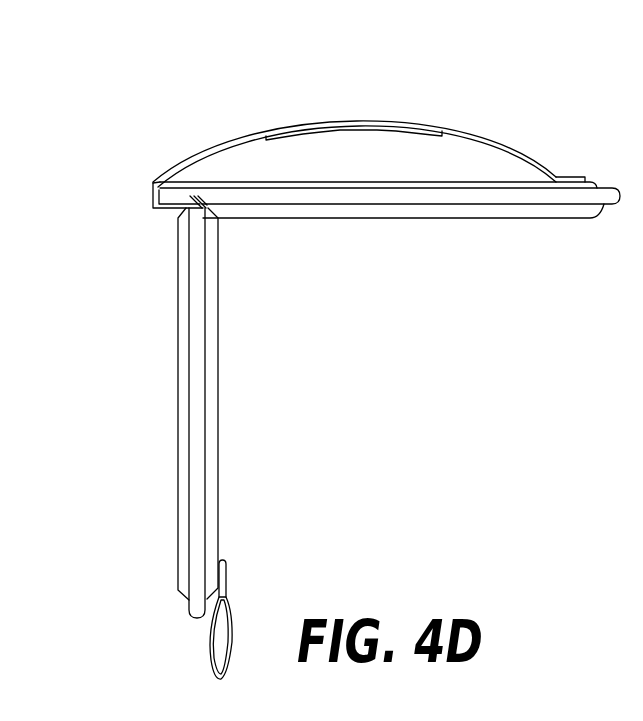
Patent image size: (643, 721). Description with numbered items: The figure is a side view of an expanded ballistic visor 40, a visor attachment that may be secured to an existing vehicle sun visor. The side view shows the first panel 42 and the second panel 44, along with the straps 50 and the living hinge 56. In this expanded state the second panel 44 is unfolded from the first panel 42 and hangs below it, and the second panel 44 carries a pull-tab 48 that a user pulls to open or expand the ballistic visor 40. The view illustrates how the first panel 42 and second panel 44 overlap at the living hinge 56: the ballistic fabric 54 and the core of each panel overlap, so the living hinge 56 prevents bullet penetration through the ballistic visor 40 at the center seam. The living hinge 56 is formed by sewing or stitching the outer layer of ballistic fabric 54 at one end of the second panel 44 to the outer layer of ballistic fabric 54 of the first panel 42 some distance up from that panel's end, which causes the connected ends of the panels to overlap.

The ballistic visor 40 is at (94, 125).
The first panel 42 is at (193, 466).
The second panel 44 is at (463, 198).
The pull-tab 48 is at (208, 652).
The straps 50 is at (480, 138).
The ballistic fabric 54 is at (184, 323).
The living hinge 56 is at (153, 196).